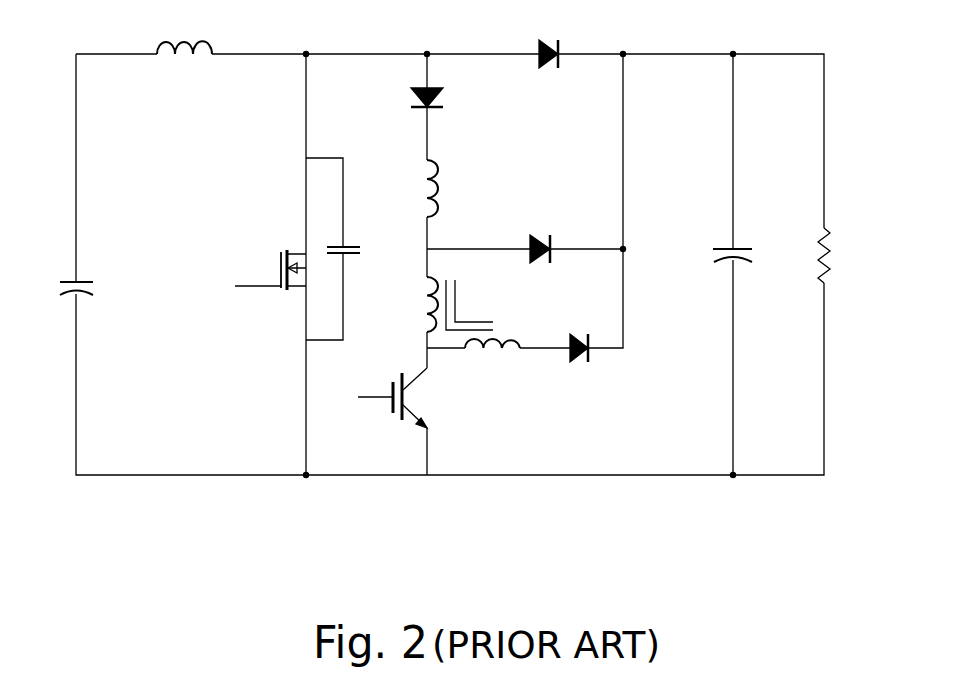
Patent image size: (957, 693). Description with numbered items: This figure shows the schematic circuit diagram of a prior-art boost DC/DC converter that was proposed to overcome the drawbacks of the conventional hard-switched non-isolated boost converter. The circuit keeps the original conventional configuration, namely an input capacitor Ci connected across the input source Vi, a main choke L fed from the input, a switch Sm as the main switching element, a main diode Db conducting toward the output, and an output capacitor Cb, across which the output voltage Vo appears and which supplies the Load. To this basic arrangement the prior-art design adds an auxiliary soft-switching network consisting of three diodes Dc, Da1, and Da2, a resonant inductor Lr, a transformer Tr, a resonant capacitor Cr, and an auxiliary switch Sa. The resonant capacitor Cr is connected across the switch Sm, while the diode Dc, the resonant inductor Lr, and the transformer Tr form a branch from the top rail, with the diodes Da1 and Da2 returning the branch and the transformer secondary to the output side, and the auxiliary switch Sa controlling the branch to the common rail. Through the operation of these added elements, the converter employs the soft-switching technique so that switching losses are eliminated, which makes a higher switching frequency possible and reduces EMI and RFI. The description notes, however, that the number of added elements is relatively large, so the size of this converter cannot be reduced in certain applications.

The main choke L is at (184, 31).
The main diode Db is at (539, 42).
The diode Dc is at (442, 98).
The resonant inductor Lr is at (417, 188).
The transformer Tr is at (454, 312).
The diode Da1 is at (525, 234).
The diode Da2 is at (588, 368).
The auxiliary switch Sa is at (417, 398).
The switch Sm is at (267, 269).
The resonant capacitor Cr is at (336, 249).
The input capacitor Ci is at (87, 288).
The input voltage Vi is at (46, 295).
The output capacitor Cb is at (745, 252).
The load Load is at (844, 254).
The output voltage Vo is at (889, 246).